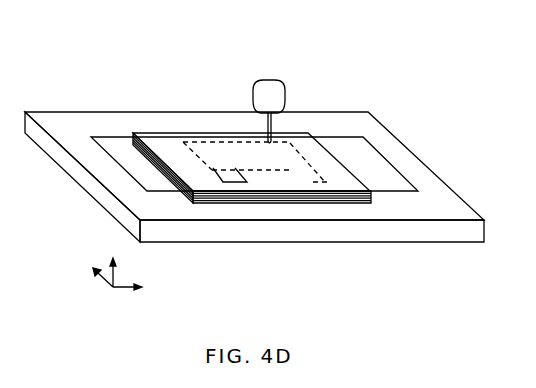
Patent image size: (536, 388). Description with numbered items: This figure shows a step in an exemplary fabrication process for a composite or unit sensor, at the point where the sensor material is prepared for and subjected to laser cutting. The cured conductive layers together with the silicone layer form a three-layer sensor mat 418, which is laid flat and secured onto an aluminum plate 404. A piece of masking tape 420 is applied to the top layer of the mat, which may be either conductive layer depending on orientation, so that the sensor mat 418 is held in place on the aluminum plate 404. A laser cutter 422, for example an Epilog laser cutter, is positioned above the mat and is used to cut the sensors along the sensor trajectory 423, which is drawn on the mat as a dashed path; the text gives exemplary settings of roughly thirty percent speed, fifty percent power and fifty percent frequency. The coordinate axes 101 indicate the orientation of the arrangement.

The aluminum plate 404 is at (256, 230).
The masking tape 420 is at (354, 158).
The 3-layer sensor mat 418 is at (372, 193).
The sensor trajectory 423 is at (284, 140).
The laser cutter 422 is at (282, 79).
The coordinate system 101 is at (104, 300).